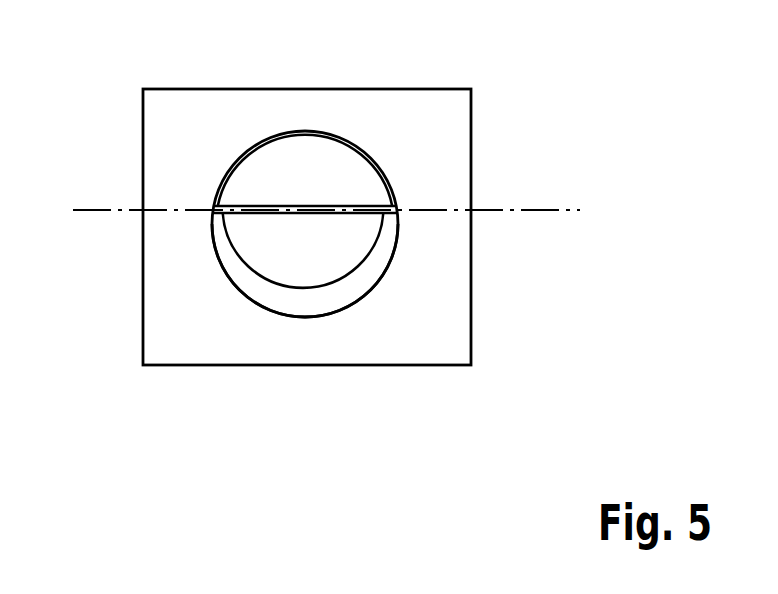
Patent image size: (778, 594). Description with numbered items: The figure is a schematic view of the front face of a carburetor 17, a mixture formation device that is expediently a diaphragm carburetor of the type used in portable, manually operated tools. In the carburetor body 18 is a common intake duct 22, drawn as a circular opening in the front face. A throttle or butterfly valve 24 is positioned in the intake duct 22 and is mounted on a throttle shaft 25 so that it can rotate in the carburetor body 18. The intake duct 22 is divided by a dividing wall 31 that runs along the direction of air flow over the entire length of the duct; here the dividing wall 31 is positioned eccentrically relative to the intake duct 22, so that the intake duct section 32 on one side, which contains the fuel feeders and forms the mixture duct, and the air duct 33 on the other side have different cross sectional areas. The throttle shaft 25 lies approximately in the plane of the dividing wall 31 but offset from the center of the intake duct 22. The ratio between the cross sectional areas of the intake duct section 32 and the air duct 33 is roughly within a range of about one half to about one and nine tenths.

The carburetor 17 is at (359, 187).
The carburetor body 18 is at (415, 107).
The intake duct 22 is at (211, 243).
The throttle valve 24 is at (276, 154).
The throttle shaft 25 is at (546, 210).
The dividing wall 31 is at (355, 215).
The intake duct section 32 is at (339, 137).
The air duct 33 is at (365, 282).